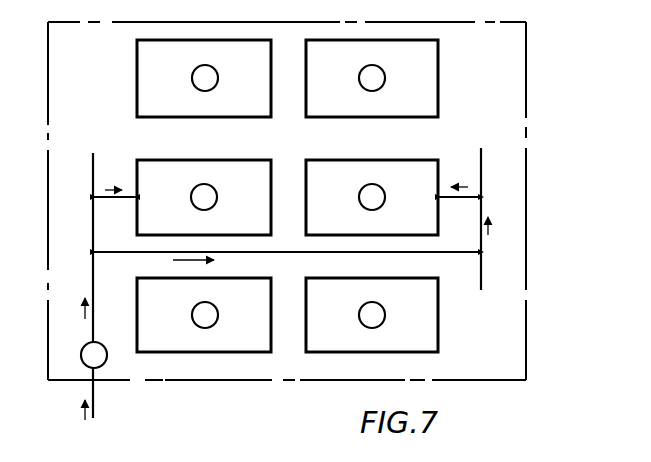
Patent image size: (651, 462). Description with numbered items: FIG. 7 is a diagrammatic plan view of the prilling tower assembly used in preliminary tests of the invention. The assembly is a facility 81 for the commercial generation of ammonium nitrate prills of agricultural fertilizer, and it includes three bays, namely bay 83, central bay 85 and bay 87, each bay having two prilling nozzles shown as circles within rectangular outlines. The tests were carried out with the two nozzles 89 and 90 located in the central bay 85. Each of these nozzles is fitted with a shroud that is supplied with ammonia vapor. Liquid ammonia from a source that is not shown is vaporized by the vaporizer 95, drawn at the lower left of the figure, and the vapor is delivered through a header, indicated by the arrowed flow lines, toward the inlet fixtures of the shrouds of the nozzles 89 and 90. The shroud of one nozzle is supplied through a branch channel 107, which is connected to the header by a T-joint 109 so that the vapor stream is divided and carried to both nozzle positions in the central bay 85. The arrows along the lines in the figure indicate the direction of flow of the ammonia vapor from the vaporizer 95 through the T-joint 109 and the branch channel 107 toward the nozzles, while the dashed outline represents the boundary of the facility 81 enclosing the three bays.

The facility 81 is at (97, 91).
The bay 83 is at (297, 81).
The central bay 85 is at (297, 195).
The bay 87 is at (297, 315).
The nozzle 89 is at (210, 185).
The nozzle 90 is at (379, 186).
The vaporizer 95 is at (101, 358).
The branch channel 107 is at (317, 253).
The T-joint 109 is at (93, 252).